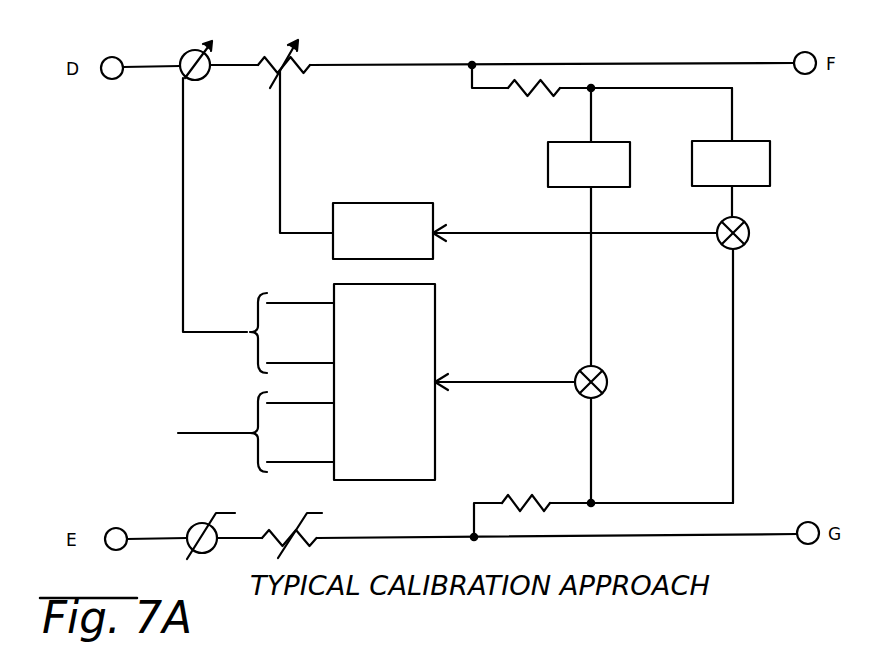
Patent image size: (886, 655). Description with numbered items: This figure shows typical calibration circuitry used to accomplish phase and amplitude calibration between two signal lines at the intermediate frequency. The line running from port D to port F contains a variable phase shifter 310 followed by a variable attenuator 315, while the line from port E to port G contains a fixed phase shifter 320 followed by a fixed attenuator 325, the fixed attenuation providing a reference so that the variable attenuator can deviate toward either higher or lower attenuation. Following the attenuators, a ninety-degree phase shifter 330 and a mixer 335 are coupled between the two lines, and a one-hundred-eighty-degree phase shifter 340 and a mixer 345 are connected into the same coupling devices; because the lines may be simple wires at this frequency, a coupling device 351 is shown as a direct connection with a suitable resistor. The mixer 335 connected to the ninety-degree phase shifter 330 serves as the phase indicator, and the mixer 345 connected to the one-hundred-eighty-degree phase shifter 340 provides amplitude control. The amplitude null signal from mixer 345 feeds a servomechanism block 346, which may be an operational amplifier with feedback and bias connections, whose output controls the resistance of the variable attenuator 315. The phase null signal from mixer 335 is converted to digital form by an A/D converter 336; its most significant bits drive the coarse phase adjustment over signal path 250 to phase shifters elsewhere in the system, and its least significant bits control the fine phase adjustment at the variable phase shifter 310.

The variable phase shifter 310 is at (212, 58).
The variable attenuator 315 is at (304, 58).
The fixed phase shifter 320 is at (192, 523).
The fixed attenuator 325 is at (284, 503).
The 90° phase shifter 330 is at (548, 158).
The mixer 335 is at (607, 390).
The A/D converter 336 is at (437, 318).
The 180° phase shifter 340 is at (770, 155).
The mixer 345 is at (747, 244).
The servomechanism block 346 is at (470, 78).
The coupling device 351 is at (474, 520).
The signal path 250 is at (238, 418).